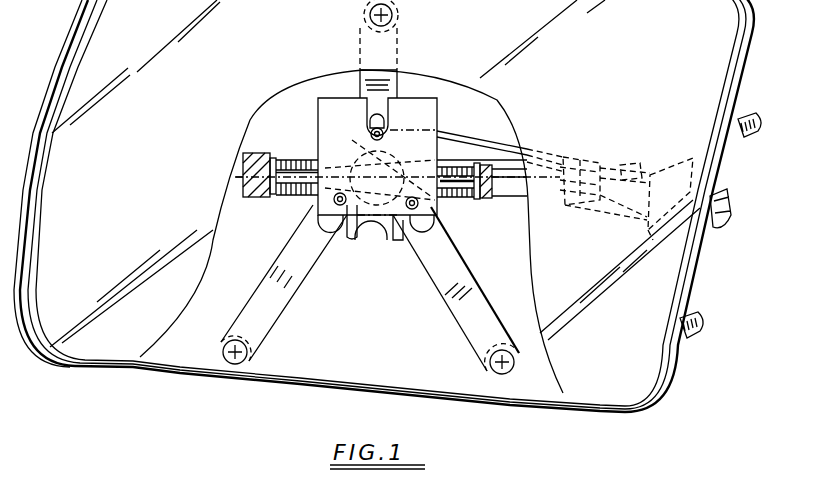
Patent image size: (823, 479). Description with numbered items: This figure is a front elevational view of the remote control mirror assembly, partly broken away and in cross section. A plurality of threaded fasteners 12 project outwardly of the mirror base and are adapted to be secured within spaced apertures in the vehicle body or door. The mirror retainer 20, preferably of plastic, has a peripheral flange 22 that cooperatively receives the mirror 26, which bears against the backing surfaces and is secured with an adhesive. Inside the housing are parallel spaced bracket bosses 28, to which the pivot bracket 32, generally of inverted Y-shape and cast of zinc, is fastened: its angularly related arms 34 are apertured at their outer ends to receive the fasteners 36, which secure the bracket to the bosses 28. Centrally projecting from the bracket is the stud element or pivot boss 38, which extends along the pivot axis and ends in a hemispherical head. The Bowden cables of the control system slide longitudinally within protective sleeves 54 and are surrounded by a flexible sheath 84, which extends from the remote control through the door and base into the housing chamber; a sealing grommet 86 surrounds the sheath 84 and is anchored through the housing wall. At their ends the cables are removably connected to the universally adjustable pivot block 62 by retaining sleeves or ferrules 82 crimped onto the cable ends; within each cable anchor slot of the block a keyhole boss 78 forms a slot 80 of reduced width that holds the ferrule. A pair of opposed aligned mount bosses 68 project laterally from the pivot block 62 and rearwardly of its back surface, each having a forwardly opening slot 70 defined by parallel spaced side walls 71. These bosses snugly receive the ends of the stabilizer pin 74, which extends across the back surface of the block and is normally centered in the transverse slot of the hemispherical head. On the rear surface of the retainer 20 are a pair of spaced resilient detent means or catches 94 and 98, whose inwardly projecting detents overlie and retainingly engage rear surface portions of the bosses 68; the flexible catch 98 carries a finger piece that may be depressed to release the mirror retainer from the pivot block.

The threaded fasteners 12 is at (750, 120).
The mirror retainer 20 is at (118, 357).
The peripheral flange 22 is at (687, 262).
The mirror 26 is at (97, 338).
The bracket bosses 28 is at (398, 42).
The pivot bracket 32 is at (263, 272).
The arms 34 is at (261, 330).
The fasteners 36 is at (250, 358).
The pivot boss 38 is at (360, 153).
The protective sleeves 54 is at (552, 156).
The pivot block 62 is at (335, 97).
The mount bosses 68 is at (300, 199).
The slot 70 is at (486, 199).
The side walls 71 is at (280, 158).
The stabilizer pin 74 is at (292, 160).
The keyhole boss 78 is at (390, 127).
The slot of reduced width 80 is at (351, 238).
The ferrules 82 is at (371, 134).
The flexible sheath 84 is at (722, 206).
The sealing grommet 86 is at (672, 165).
The catch 94 is at (572, 194).
The flexible catch 98 is at (243, 178).